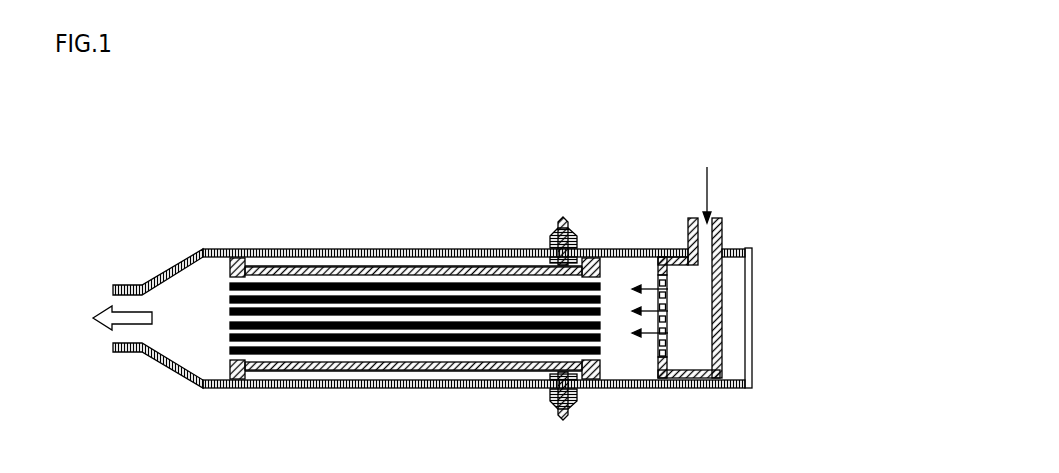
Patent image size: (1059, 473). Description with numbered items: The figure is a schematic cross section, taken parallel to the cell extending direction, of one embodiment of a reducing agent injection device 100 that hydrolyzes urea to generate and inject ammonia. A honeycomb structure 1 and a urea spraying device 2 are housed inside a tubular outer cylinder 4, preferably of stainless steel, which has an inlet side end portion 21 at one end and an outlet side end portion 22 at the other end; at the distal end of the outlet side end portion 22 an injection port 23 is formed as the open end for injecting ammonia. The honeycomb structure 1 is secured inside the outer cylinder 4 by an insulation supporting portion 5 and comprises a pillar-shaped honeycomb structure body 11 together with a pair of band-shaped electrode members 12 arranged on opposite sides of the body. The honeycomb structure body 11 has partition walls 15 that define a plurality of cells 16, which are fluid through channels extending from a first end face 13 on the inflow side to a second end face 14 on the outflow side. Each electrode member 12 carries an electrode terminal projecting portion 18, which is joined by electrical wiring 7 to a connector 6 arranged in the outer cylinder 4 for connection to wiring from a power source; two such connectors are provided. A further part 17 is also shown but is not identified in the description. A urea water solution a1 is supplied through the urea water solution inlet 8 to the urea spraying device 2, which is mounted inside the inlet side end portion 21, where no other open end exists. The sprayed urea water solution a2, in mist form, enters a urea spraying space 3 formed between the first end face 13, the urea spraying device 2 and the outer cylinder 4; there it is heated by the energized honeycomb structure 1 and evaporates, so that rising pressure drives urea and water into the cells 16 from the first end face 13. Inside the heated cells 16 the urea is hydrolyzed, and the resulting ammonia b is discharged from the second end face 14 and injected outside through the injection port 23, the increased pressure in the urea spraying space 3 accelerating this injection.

The reducing agent injection device 100 is at (898, 95).
The honeycomb structure 1 is at (412, 255).
The urea spraying device 2 is at (649, 362).
The urea spraying space 3 is at (617, 280).
The outer cylinder 4 is at (490, 240).
The insulation supporting portion 5 is at (262, 262).
The connector 6 is at (578, 232).
The electrical wiring 7 is at (556, 222).
The urea water solution inlet 8 is at (722, 218).
The honeycomb structure body 11 is at (230, 300).
The electrode member 12 is at (446, 268).
The first end face 13 is at (600, 350).
The second end face 14 is at (230, 338).
The partition walls 15 is at (338, 283).
The cells 16 is at (240, 318).
The electrode plate surface layer 17 is at (383, 267).
The electrode terminal projecting portion 18 is at (550, 258).
The inlet side end portion 21 is at (737, 248).
The outlet side end portion 22 is at (122, 283).
The injection port 23 is at (118, 302).
The urea water solution a1 is at (707, 187).
The urea water solution sprayed from the urea spraying device a2 is at (655, 262).
The ammonia b is at (118, 325).